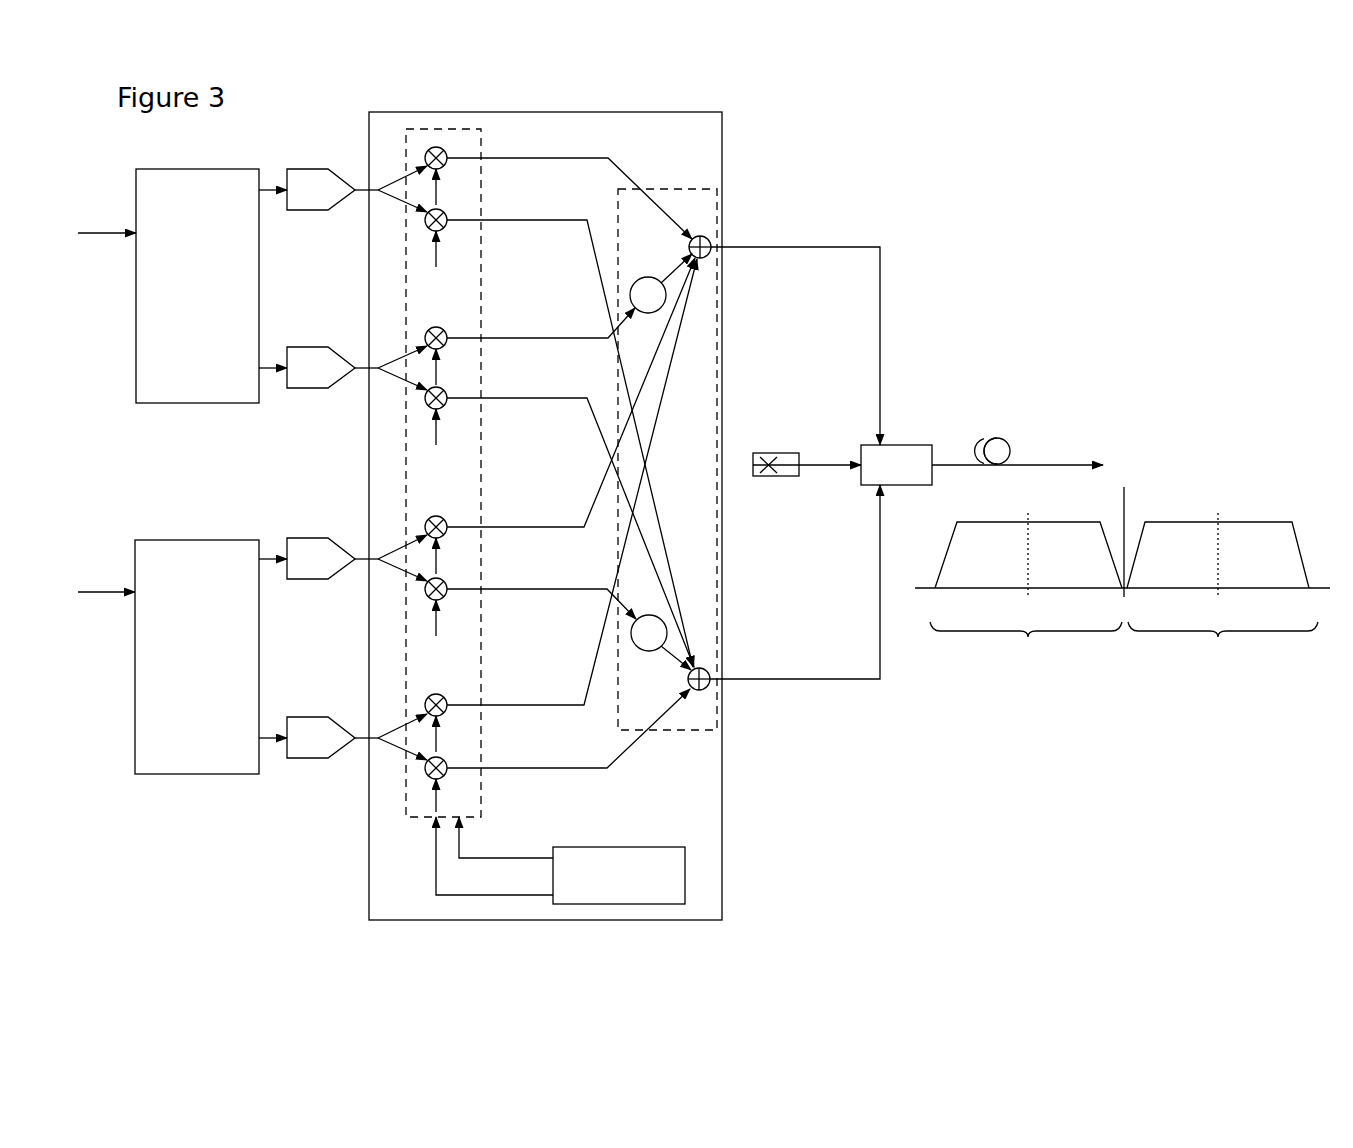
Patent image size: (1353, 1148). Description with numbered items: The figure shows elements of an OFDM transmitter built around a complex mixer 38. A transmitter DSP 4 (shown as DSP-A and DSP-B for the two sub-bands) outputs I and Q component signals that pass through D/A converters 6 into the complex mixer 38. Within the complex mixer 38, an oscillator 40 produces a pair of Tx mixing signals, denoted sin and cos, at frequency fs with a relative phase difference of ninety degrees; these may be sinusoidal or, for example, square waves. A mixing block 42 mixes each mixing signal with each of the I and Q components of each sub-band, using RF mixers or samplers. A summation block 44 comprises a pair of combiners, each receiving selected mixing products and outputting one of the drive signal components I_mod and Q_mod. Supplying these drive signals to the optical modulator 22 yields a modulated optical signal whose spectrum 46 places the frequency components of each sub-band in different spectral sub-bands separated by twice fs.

The transmitter DSP 4 is at (201, 229).
The D/A converters 6 is at (305, 169).
The complex mixer 38 is at (722, 148).
The mixing block 42 is at (481, 297).
The summation block 44 is at (699, 474).
The oscillator 40 is at (647, 847).
The optical modulator 22 is at (920, 445).
The spectrum 46 is at (1210, 483).